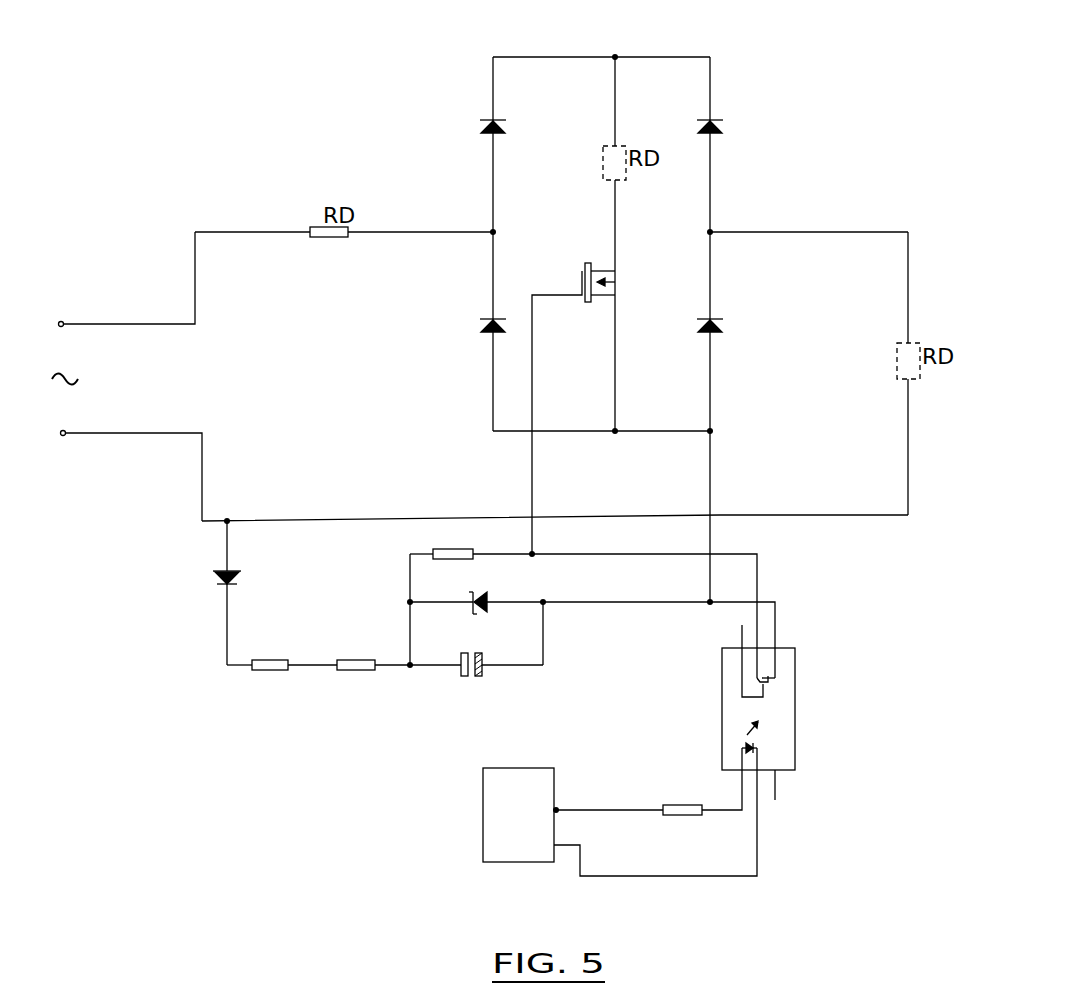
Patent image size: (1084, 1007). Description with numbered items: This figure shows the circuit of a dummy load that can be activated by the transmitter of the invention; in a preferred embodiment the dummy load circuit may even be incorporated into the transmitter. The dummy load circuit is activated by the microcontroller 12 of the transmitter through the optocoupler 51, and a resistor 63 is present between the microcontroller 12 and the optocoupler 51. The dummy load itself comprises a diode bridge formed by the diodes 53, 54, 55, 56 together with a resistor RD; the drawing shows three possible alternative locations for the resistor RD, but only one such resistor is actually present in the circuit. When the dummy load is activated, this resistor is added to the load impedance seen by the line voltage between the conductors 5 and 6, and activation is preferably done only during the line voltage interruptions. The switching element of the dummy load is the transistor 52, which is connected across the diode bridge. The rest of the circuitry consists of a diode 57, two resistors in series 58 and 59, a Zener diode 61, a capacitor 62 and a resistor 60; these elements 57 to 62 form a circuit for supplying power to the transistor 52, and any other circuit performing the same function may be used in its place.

The conductor 5 is at (134, 321).
The conductor 6 is at (140, 440).
The microcontroller 12 is at (493, 807).
The optocoupler 51 is at (789, 711).
The transistor 52 is at (574, 256).
The diode 53 is at (486, 132).
The diode 54 is at (720, 124).
The diode 55 is at (488, 336).
The diode 56 is at (718, 334).
The diode 57 is at (243, 576).
The resistor 58 is at (274, 646).
The resistor 59 is at (350, 677).
The resistor 60 is at (456, 553).
The Zener diode 61 is at (487, 598).
The capacitor 62 is at (479, 680).
The resistor 63 is at (693, 809).